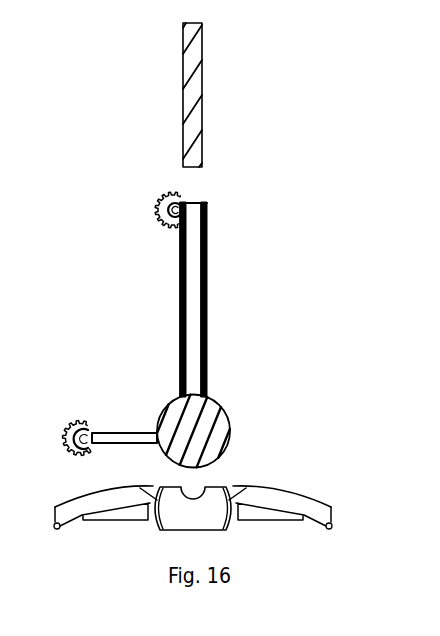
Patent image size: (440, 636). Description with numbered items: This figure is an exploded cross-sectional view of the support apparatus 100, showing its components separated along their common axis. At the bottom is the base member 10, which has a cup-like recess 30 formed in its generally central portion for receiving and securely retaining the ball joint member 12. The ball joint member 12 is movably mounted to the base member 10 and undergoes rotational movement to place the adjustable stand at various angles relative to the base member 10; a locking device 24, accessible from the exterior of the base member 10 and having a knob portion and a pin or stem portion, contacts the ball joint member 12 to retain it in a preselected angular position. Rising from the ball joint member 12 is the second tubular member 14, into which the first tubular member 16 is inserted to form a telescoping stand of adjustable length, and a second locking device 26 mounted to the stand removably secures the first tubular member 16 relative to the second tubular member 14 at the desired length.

The support apparatus 100 is at (237, 103).
The base member 10 is at (193, 504).
The ball joint member 12 is at (210, 418).
The second tubular member 14 is at (207, 280).
The first tubular member 16 is at (202, 129).
The locking device 24 is at (73, 420).
The locking device 26 is at (153, 211).
The cup-like recess 30 is at (180, 510).